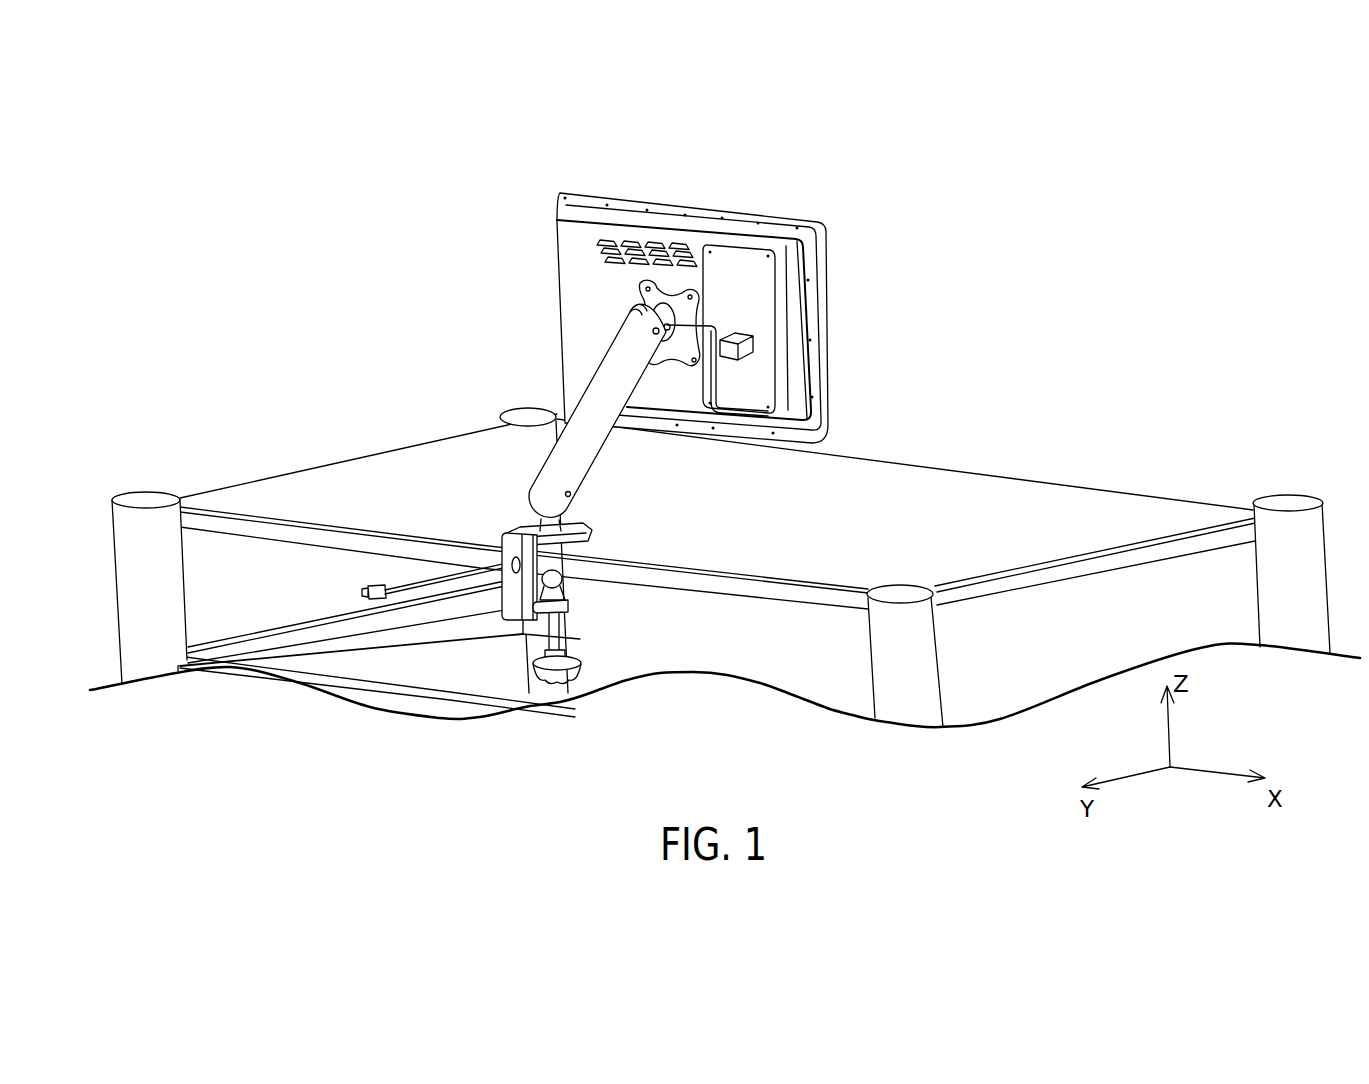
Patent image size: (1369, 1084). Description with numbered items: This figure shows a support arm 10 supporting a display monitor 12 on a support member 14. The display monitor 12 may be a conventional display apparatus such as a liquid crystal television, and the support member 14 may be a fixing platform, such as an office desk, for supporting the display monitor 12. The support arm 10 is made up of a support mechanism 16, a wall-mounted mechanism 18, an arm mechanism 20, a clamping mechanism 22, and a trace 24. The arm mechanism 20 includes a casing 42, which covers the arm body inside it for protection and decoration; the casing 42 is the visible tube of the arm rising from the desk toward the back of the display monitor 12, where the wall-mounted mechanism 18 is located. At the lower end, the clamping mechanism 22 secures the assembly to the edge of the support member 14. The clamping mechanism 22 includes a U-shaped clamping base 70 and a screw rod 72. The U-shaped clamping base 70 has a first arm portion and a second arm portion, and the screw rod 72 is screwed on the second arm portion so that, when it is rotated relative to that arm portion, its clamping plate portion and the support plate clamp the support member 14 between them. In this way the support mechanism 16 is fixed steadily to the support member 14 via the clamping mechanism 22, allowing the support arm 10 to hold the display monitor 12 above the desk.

The support arm 10 is at (758, 435).
The display monitor 12 is at (663, 203).
The support member 14 is at (333, 483).
The support mechanism 16 is at (721, 410).
The wall-mounted mechanism 18 is at (693, 300).
The arm mechanism 20 is at (750, 350).
The clamping mechanism 22 is at (755, 527).
The trace 24 is at (714, 325).
The casing 42 is at (583, 380).
The U-shaped clamping base 70 is at (597, 523).
The screw rod 72 is at (565, 634).